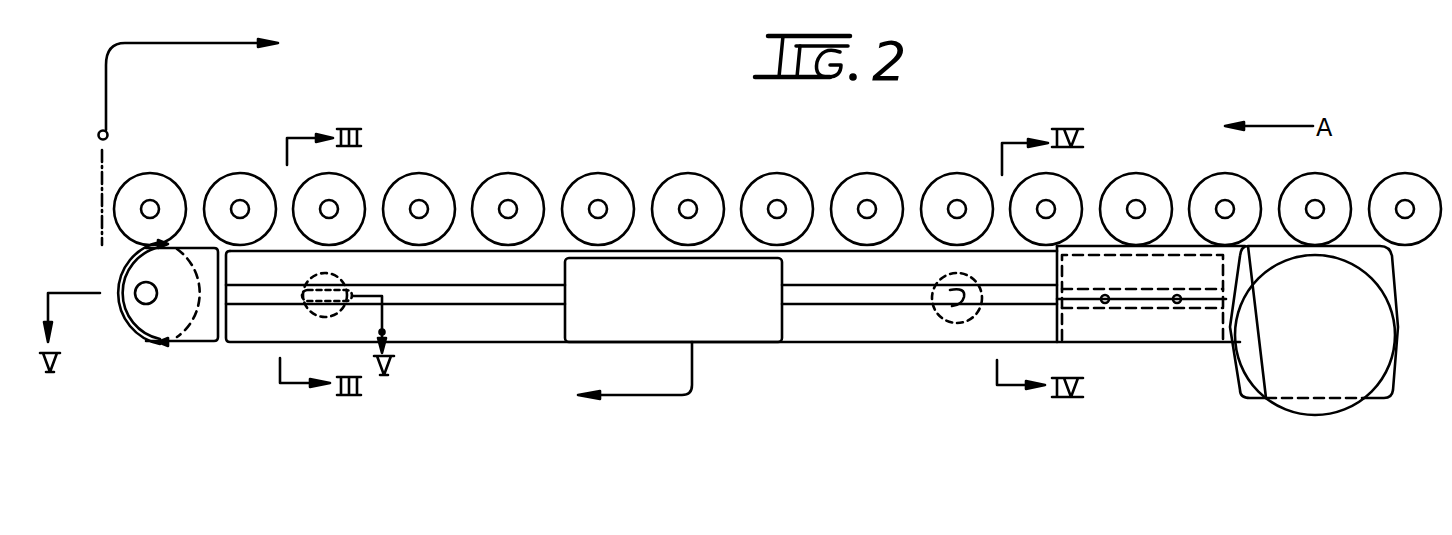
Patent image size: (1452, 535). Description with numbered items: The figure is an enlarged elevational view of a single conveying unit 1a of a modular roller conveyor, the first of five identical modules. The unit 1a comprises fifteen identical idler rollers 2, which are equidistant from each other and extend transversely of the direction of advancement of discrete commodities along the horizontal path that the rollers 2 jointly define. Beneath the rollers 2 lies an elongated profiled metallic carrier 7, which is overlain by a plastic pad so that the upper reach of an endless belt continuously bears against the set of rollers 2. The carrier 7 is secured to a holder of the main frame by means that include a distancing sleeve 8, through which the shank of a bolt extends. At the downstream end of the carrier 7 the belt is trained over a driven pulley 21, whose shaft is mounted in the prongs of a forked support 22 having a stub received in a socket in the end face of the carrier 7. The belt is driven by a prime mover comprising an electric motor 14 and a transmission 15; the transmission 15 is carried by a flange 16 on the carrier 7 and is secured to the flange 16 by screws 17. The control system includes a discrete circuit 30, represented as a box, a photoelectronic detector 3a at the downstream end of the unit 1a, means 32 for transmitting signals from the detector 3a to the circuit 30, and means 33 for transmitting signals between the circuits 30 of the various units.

The conveying unit 1a is at (552, 150).
The idler rollers 2 is at (470, 183).
The photoelectronic detector 3a is at (108, 132).
The carrier 7 is at (430, 326).
The distancing sleeve 8 is at (950, 318).
The electric motor 14 is at (1293, 370).
The transmission 15 is at (1240, 397).
The flange 16 is at (1128, 322).
The screws 17 is at (1174, 304).
The driven pulley 21 is at (116, 340).
The forked support 22 is at (197, 333).
The circuit 30 is at (721, 316).
The signal transmitting means 32 is at (195, 43).
The signal transmitting means 33 is at (650, 396).